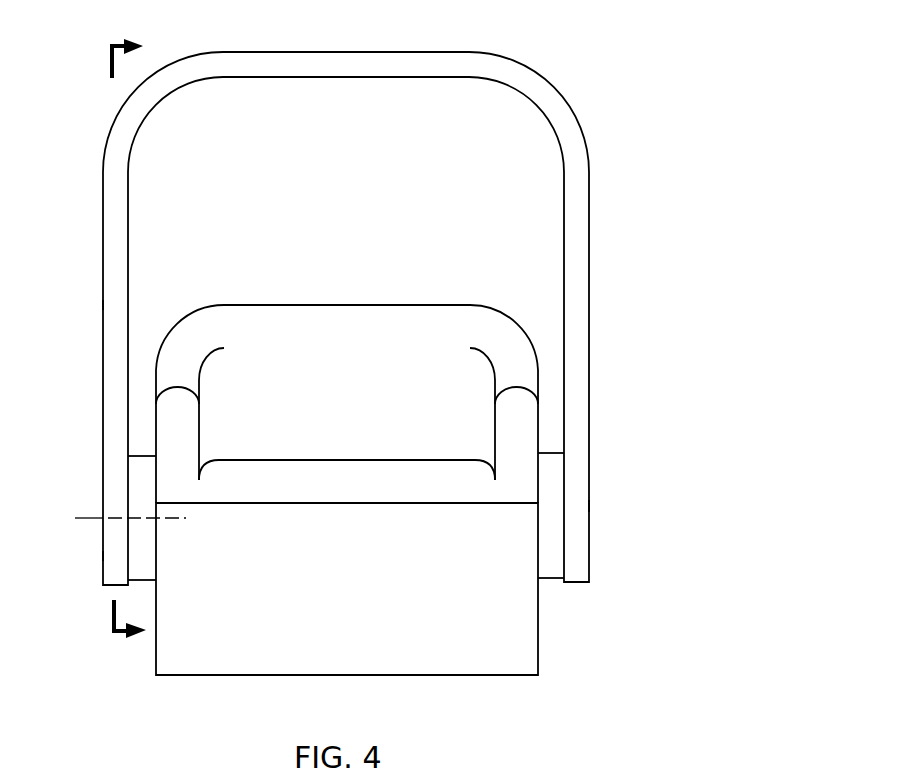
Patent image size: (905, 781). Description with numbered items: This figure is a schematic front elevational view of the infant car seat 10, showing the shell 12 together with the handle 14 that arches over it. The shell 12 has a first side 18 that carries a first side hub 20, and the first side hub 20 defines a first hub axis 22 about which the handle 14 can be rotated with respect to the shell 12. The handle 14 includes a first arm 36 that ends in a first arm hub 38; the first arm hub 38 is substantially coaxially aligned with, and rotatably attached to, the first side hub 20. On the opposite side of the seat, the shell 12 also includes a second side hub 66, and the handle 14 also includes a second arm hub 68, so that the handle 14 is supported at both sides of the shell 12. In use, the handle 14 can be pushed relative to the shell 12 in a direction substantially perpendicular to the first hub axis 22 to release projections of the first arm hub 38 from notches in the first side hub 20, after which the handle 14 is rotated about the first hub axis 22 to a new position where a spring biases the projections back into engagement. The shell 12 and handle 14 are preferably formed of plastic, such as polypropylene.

The infant car seat 10 is at (672, 77).
The shell 12 is at (560, 653).
The handle 14 is at (536, 44).
The first side 18 is at (156, 660).
The first side hub 20 is at (141, 456).
The first hub axis 22 is at (76, 518).
The first arm 36 is at (104, 303).
The first arm hub 38 is at (104, 556).
The second side hub 66 is at (550, 568).
The second arm hub 68 is at (582, 506).